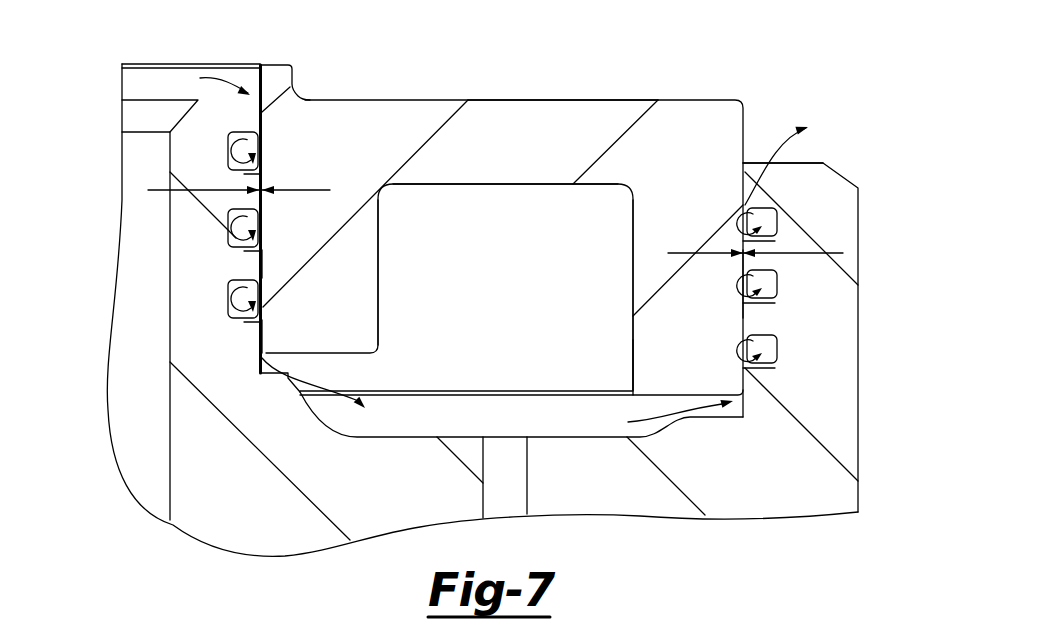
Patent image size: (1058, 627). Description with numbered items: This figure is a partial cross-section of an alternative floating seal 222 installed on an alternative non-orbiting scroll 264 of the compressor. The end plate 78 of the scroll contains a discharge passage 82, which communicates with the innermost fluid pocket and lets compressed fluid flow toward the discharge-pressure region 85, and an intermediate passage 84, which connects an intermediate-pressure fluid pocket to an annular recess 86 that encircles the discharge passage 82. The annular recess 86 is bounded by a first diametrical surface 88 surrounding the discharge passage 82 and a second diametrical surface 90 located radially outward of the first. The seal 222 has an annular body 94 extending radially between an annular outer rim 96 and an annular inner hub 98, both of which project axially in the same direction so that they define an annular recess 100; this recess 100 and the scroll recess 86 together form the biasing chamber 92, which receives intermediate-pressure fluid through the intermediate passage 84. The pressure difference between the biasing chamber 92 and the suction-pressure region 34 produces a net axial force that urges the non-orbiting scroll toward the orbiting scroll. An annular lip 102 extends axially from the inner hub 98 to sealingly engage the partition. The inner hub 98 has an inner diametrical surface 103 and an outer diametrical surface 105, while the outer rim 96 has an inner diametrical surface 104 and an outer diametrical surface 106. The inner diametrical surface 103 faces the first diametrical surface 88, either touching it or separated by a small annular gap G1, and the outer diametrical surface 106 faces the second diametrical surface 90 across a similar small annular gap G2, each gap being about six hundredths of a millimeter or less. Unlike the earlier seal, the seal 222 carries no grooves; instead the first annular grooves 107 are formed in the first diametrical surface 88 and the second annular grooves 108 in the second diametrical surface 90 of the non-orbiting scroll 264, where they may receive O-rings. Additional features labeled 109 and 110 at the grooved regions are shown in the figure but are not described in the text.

The suction-pressure region 34 is at (795, 143).
The end plate 78 is at (830, 423).
The discharge passage 82 is at (150, 160).
The intermediate passage 84 is at (527, 505).
The discharge-pressure region 85 is at (137, 86).
The annular recess 86 is at (398, 423).
The first diametrical surface 88 is at (257, 270).
The second diametrical surface 90 is at (743, 318).
The biasing chamber 92 is at (558, 200).
The annular body 94 is at (495, 110).
The outer rim 96 is at (650, 362).
The inner hub 98 is at (367, 330).
The annular recess 100 is at (470, 200).
The annular lip 102 is at (277, 65).
The inner diametrical surface 103 is at (258, 110).
The inner diametrical surface 104 is at (633, 240).
The outer diametrical surface 105 is at (380, 237).
The outer diametrical surface 106 is at (745, 112).
The first annular grooves 107 is at (257, 168).
The second annular grooves 108 is at (777, 215).
The left piston ring 109 is at (250, 328).
The right ring groove 110 is at (752, 243).
The seal 222 is at (692, 100).
The non-orbiting scroll 264 is at (864, 322).
The annular gap G1 is at (252, 190).
The annular gap G2 is at (741, 253).